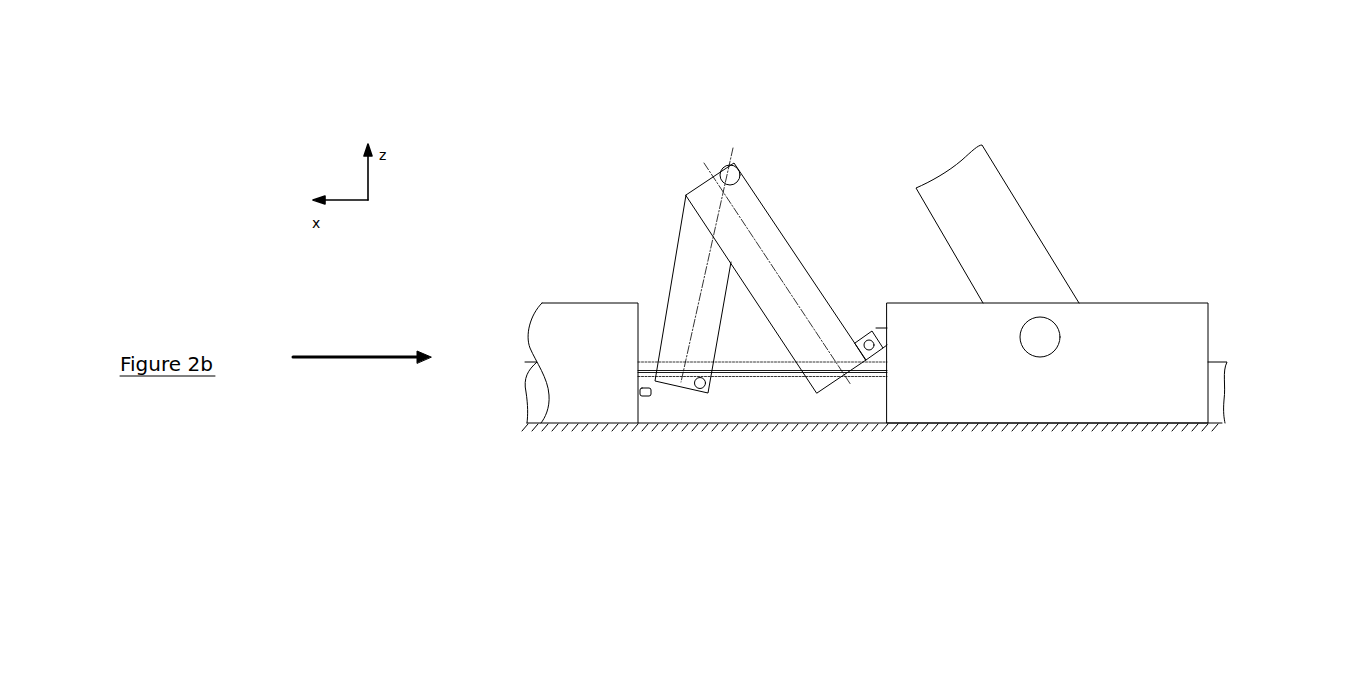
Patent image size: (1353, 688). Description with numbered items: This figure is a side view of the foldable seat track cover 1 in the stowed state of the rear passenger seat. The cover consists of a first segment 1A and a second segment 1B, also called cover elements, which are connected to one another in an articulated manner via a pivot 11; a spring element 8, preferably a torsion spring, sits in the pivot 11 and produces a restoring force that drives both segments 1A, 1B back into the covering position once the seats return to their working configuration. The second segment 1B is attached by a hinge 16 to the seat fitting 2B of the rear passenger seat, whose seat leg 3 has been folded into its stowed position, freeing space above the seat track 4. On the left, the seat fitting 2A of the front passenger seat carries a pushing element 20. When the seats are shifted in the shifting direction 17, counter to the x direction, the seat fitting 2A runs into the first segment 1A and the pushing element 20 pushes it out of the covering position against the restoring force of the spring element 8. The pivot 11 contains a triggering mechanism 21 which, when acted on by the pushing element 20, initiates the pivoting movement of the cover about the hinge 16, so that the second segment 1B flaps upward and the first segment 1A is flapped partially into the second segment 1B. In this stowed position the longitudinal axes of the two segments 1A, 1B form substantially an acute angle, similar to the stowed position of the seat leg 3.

The seat track cover 1 is at (745, 238).
The first segment 1A is at (677, 253).
The second segment 1B is at (778, 227).
The seat fitting 2A is at (565, 302).
The seat fitting 2B is at (1184, 303).
The seat leg 3 is at (1046, 213).
The seat track 4 is at (1228, 383).
The spring element 8 is at (730, 175).
The pivot 11 is at (738, 154).
The hinge 16 is at (870, 312).
The shifting direction 17 is at (333, 352).
The pushing element 20 is at (645, 398).
The triggering mechanism 21 is at (725, 168).